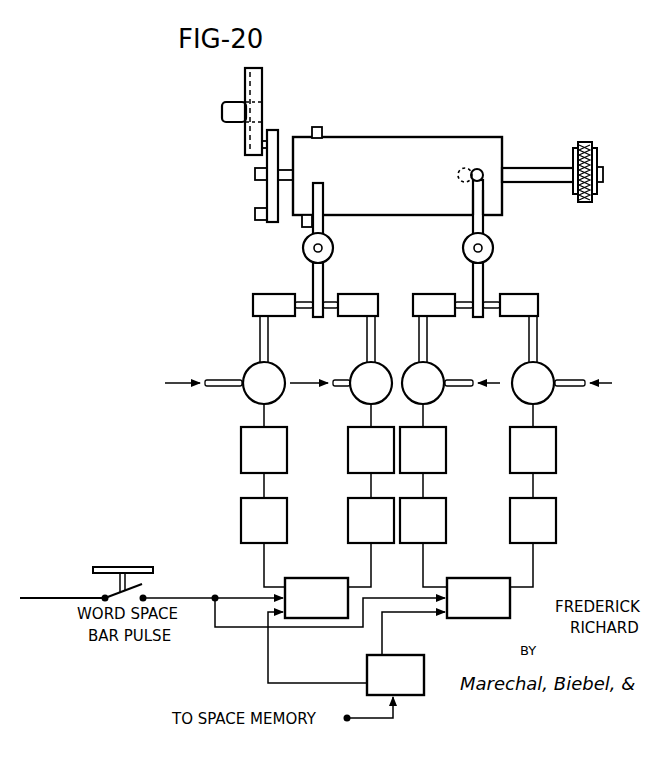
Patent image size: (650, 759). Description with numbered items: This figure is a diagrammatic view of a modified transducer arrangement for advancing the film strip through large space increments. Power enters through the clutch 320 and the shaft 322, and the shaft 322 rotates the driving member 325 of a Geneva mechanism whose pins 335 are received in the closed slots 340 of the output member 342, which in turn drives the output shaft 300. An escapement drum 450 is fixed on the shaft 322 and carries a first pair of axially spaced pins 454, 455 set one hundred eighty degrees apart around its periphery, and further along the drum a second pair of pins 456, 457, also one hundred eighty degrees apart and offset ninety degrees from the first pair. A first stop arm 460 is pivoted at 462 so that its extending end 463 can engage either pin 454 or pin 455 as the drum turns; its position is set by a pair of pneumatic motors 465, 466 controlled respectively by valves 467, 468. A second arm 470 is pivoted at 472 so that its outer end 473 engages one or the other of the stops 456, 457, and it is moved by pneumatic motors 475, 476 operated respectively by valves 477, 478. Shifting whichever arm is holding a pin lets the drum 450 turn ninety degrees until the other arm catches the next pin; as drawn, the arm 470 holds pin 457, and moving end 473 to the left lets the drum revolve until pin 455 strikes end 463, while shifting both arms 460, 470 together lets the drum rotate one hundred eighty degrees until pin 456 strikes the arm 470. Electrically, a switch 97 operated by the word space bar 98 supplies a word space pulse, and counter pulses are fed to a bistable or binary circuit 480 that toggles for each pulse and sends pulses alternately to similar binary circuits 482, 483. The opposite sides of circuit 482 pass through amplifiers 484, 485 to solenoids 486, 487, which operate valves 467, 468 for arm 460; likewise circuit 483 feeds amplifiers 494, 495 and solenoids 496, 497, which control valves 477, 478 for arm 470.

The output shaft 300 is at (236, 99).
The output member 342 is at (260, 72).
The closed slots 340 is at (258, 112).
The driving member 325 is at (272, 198).
The pins 335 is at (258, 210).
The shaft 322 is at (292, 174).
The escapement drum 450 is at (397, 160).
The pin 455 is at (318, 127).
The extending end 463 is at (322, 192).
The pin 454 is at (304, 224).
The first stop arm 460 is at (320, 223).
The pivot 462 is at (323, 251).
The second arm 470 is at (481, 223).
The outer end 473 is at (479, 196).
The pin 457 is at (480, 170).
The pin 456 is at (463, 168).
The pivot 472 is at (482, 250).
The clutch 320 is at (590, 206).
The pneumatic motor 465 is at (253, 308).
The pneumatic motor 466 is at (350, 316).
The pneumatic motor 475 is at (447, 294).
The pneumatic motor 476 is at (538, 304).
The valve 467 is at (257, 374).
The valve 468 is at (363, 377).
The valve 477 is at (434, 378).
The valve 478 is at (543, 377).
The solenoid 486 is at (241, 446).
The solenoid 487 is at (349, 444).
The solenoid 496 is at (444, 442).
The solenoid 497 is at (556, 440).
The amplifier 484 is at (242, 515).
The amplifier 485 is at (349, 515).
The amplifier 494 is at (443, 515).
The amplifier 495 is at (556, 526).
The binary circuit 482 is at (325, 588).
The binary circuit 483 is at (498, 586).
The bistable or binary circuit 480 is at (418, 660).
The switch 97 is at (142, 589).
The word space bar 98 is at (123, 566).